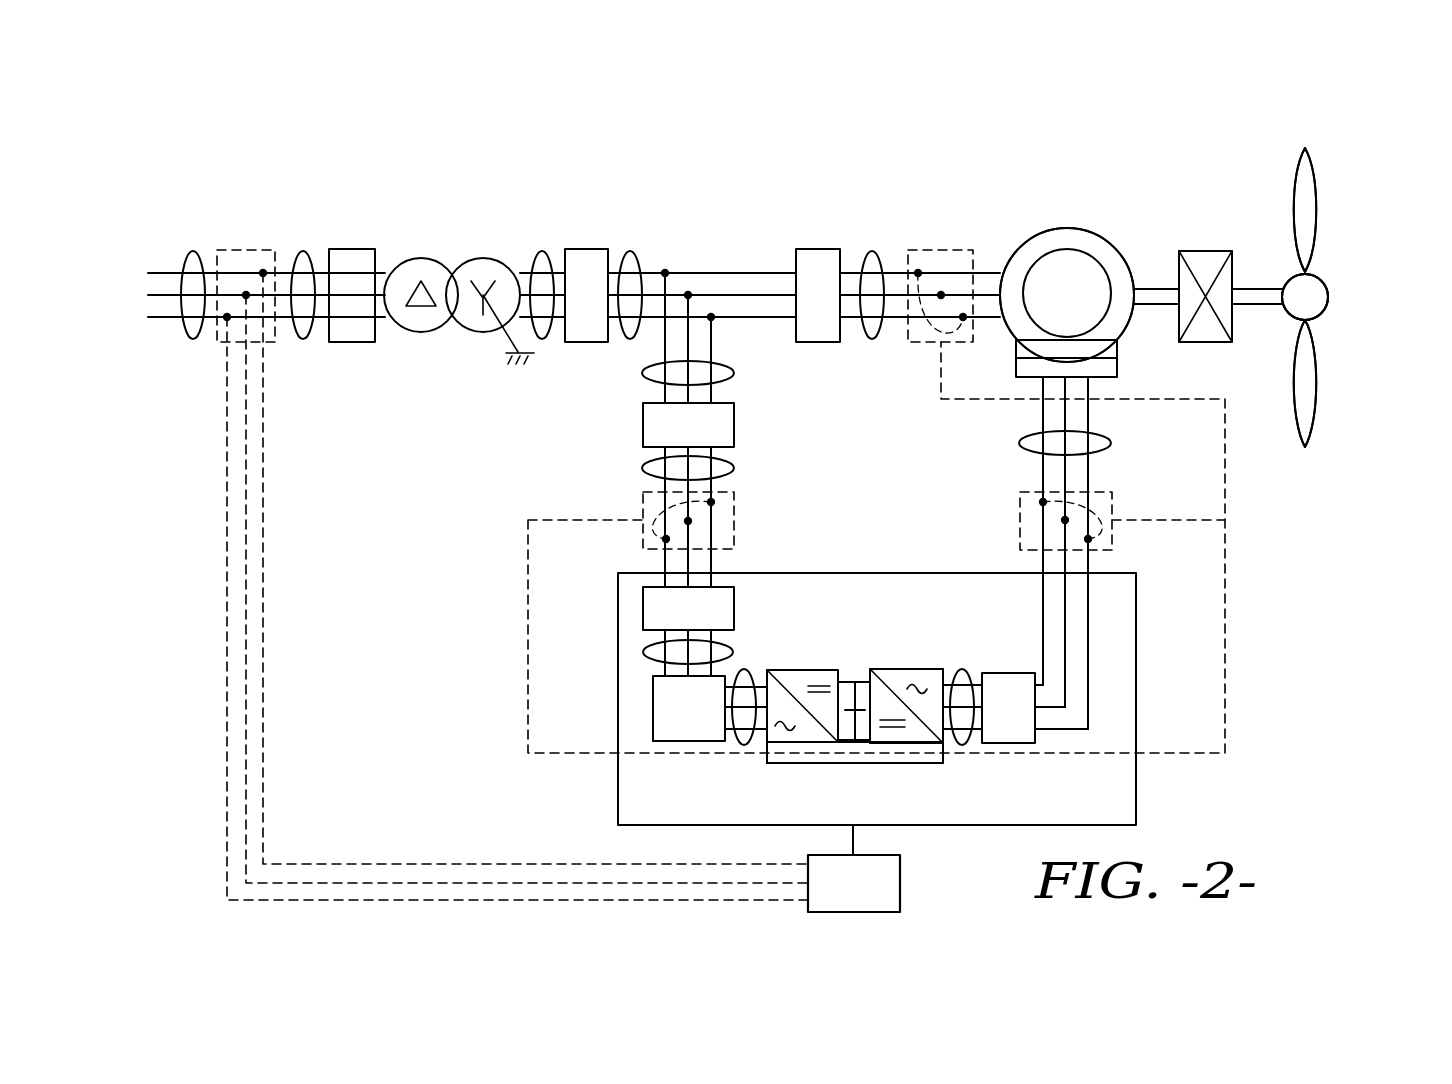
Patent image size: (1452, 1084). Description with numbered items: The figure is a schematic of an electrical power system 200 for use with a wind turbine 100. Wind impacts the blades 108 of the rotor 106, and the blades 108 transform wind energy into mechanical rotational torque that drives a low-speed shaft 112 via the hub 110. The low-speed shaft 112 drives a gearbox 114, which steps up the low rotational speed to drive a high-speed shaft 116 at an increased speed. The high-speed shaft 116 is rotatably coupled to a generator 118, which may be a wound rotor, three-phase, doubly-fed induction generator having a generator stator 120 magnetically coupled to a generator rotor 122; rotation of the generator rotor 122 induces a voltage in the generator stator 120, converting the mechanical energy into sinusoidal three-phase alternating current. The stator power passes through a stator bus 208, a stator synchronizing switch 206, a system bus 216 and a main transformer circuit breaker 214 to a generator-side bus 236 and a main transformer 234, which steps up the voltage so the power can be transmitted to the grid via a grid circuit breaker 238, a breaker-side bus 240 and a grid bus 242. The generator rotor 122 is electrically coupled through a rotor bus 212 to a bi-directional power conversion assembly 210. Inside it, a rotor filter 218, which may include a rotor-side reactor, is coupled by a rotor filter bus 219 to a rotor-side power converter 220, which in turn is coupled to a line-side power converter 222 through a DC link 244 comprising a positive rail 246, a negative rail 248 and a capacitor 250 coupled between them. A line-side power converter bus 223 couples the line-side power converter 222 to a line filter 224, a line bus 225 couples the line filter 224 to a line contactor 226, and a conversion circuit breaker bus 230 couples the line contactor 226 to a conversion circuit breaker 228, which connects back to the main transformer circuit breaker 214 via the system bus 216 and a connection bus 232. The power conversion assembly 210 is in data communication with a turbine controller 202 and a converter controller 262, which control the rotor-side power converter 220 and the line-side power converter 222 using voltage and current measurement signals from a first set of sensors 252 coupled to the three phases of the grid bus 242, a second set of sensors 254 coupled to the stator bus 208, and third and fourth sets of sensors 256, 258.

The wind turbine 100 is at (1266, 145).
The rotor 106 is at (1327, 269).
The blades 108 is at (1320, 207).
The hub 110 is at (1330, 290).
The low-speed shaft 112 is at (1242, 288).
The gearbox 114 is at (1205, 251).
The high-speed shaft 116 is at (1167, 287).
The generator 118 is at (1059, 210).
The generator stator 120 is at (1092, 228).
The generator rotor 122 is at (1043, 272).
The electrical power system 200 is at (417, 171).
The turbine controller 202 is at (832, 898).
The stator synchronizing switch 206 is at (822, 249).
The stator bus 208 is at (874, 251).
The power conversion assembly 210 is at (1137, 668).
The rotor bus 212 is at (1113, 443).
The main transformer circuit breaker 214 is at (588, 249).
The system bus 216 is at (632, 251).
The rotor filter 218 is at (993, 673).
The rotor filter bus 219 is at (960, 670).
The rotor-side power converter 220 is at (943, 742).
The line-side power converter 222 is at (767, 742).
The line-side power converter bus 223 is at (742, 680).
The line filter 224 is at (653, 718).
The line bus 225 is at (645, 658).
The line contactor 226 is at (642, 613).
The conversion circuit breaker 228 is at (735, 428).
The conversion circuit breaker bus 230 is at (735, 473).
The connection bus 232 is at (735, 373).
The main transformer 234 is at (472, 257).
The generator-side bus 236 is at (543, 251).
The grid circuit breaker 238 is at (372, 249).
The breaker-side bus 240 is at (305, 251).
The grid bus 242 is at (195, 251).
The DC link 244 is at (863, 632).
The positive rail 246 is at (858, 680).
The negative rail 248 is at (860, 745).
The capacitor 250 is at (847, 713).
The first set of voltage and electric current sensors 252 is at (250, 250).
The second set of voltage and electric current sensors 254 is at (938, 232).
The third set of voltage and electric current sensors 256 is at (1020, 520).
The fourth set of voltage and electric current sensors 258 is at (736, 532).
The converter controller 262 is at (900, 753).